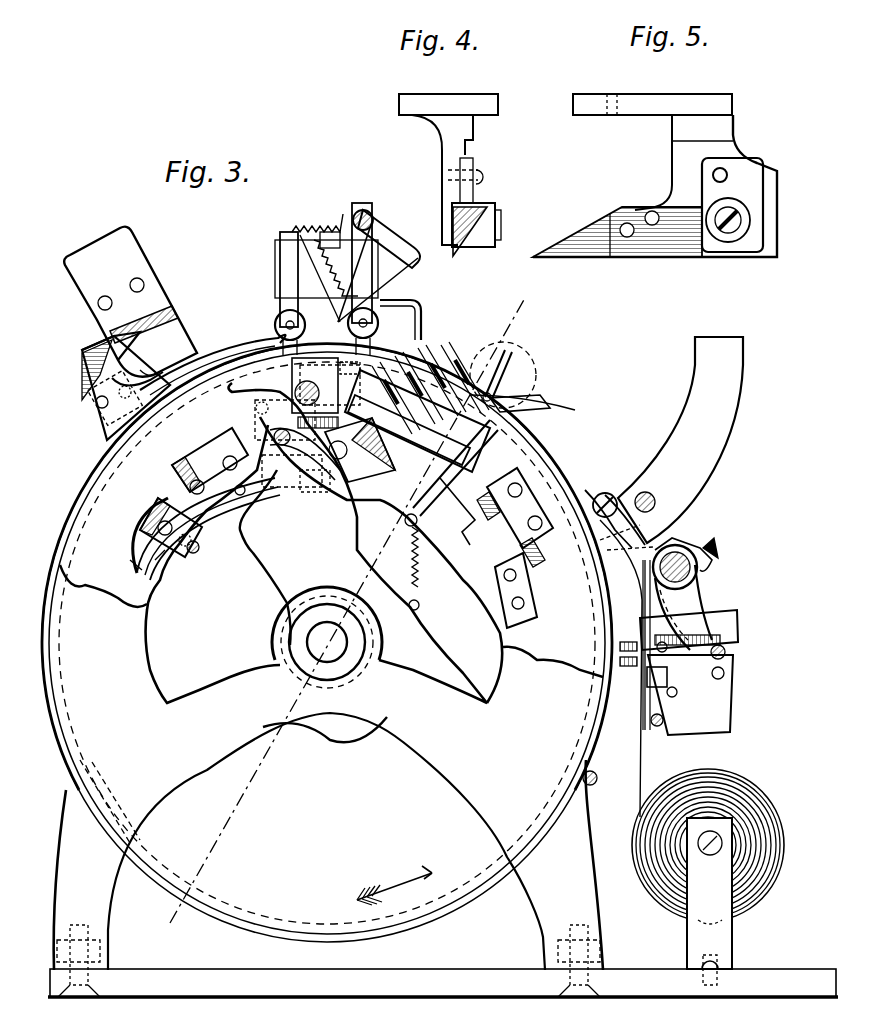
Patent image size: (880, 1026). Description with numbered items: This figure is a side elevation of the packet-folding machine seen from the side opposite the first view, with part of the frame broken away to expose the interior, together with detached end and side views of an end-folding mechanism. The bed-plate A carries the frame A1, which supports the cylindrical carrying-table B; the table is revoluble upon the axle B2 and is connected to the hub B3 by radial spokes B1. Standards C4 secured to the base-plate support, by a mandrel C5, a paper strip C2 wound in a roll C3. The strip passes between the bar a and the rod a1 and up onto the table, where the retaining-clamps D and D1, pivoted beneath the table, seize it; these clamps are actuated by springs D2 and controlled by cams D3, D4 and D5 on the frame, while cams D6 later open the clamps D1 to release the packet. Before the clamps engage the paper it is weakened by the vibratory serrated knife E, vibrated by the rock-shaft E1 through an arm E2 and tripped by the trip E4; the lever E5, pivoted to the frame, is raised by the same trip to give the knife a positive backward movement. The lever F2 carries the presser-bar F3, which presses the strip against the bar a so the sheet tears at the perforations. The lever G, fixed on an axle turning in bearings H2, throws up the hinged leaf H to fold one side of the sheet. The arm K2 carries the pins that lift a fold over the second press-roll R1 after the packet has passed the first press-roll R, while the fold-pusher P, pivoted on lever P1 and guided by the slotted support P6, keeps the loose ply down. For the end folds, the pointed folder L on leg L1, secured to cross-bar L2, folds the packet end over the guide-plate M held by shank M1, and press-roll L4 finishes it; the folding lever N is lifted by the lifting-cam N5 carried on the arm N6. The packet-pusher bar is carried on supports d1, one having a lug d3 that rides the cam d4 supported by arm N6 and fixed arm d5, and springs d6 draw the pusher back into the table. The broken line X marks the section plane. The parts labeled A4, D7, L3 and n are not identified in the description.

In FIG. 3, the bed-plate A is at (378, 990).
In FIG. 3, the frame A1 is at (327, 657).
In FIG. 3, the frame arm A4 is at (128, 560).
In FIG. 3, the carrying-table B is at (326, 841).
In FIG. 3, the radial arms or spokes B1 is at (425, 648).
In FIG. 3, the axle B2 is at (327, 642).
In FIG. 3, the hub B3 is at (318, 598).
In FIG. 3, the paper strip C2 is at (580, 487).
In FIG. 3, the roll C3 is at (784, 820).
In FIG. 3, the standards C4 is at (709, 901).
In FIG. 3, the mandrel C5 is at (709, 853).
In FIG. 3, the retaining-clamp D is at (447, 358).
In FIG. 3, the retaining-clamp D1 is at (400, 392).
In FIG. 3, the springs D2 is at (347, 368).
In FIG. 3, the cam or lug D3 is at (540, 583).
In FIG. 3, the cam or lug D4 is at (527, 573).
In FIG. 3, the cam or lug D5 is at (326, 393).
In FIG. 3, the cams D6 is at (268, 432).
In FIG. 3, the pawl D7 is at (180, 462).
In FIG. 3, the vibratory serrated knife E is at (740, 648).
In FIG. 3, the rock-shaft E1 is at (700, 567).
In FIG. 3, the arm E2 is at (700, 603).
In FIG. 3, the trip E4 is at (596, 774).
In FIG. 3, the lever E5 is at (600, 493).
In FIG. 3, the lever F2 is at (670, 712).
In FIG. 3, the presser-bar F3 is at (648, 678).
In FIG. 3, the lever G is at (545, 402).
In FIG. 3, the apron or hinged leaf H is at (500, 385).
In FIG. 3, the bearings H2 is at (503, 375).
In FIG. 3, the arm K2 is at (360, 450).
In FIG. 3, the pointed folder L is at (168, 372).
In FIG. 4, the pointed folder L is at (458, 250).
In FIG. 5, the pointed folder L is at (533, 257).
In FIG. 3, the leg L1 is at (80, 352).
In FIG. 4, the leg L1 is at (470, 105).
In FIG. 5, the leg L1 is at (637, 105).
In FIG. 3, the cross-bar L2 is at (145, 322).
In FIG. 3, the hook L3 is at (420, 330).
In FIG. 3, the press-roll L4 is at (100, 412).
In FIG. 4, the press-roll L4 is at (482, 202).
In FIG. 5, the press-roll L4 is at (740, 215).
In FIG. 3, the guide-plate M is at (240, 350).
In FIG. 3, the shank M1 is at (130, 302).
In FIG. 3, the cam-operated lever N is at (145, 548).
In FIG. 3, the lifting-cam N5 is at (207, 526).
In FIG. 3, the arm N6 is at (215, 537).
In FIG. 3, the fold-pusher P is at (318, 238).
In FIG. 3, the lever P1 is at (415, 248).
In FIG. 3, the slotted support P6 is at (292, 232).
In FIG. 3, the first press-roll R is at (354, 279).
In FIG. 3, the second press-roll R1 is at (275, 325).
In FIG. 3, the broken line X is at (336, 610).
In FIG. 3, the bar a is at (624, 660).
In FIG. 3, the bar or rod a1 is at (645, 640).
In FIG. 3, the supports d1 is at (470, 452).
In FIG. 3, the lug d3 is at (452, 511).
In FIG. 3, the cam d4 is at (318, 492).
In FIG. 3, the fixed arm d5 is at (197, 552).
In FIG. 3, the springs d6 is at (418, 570).
In FIG. 3, the nut n is at (321, 252).